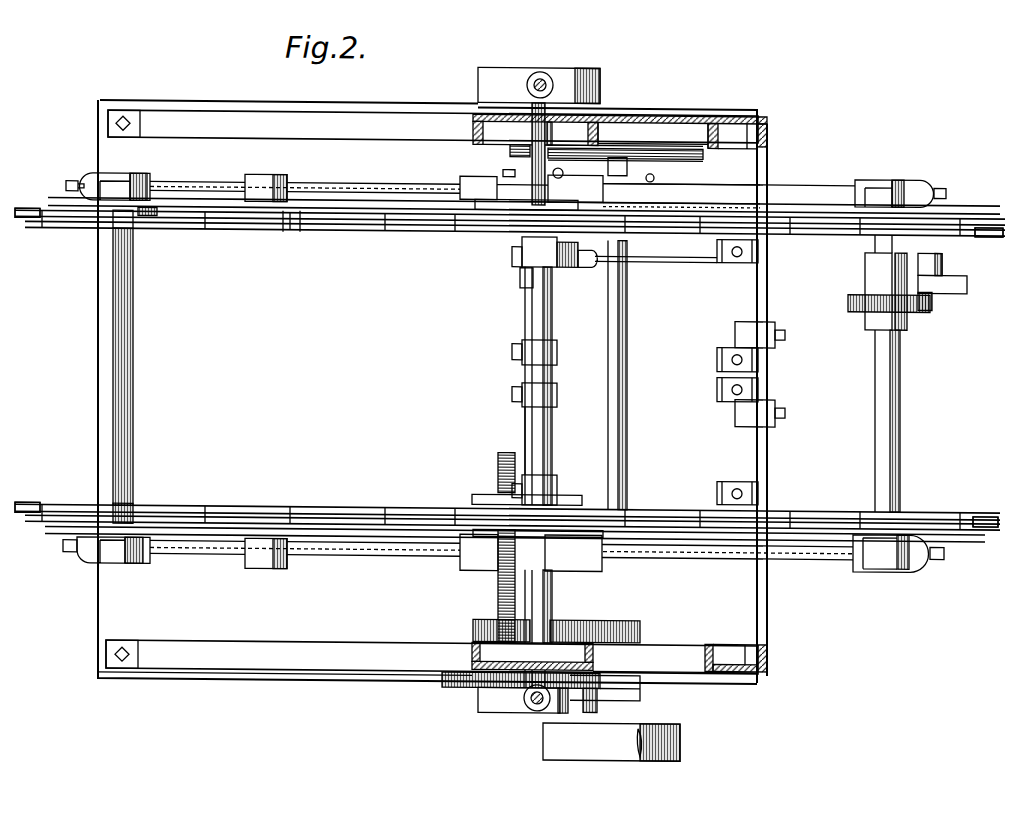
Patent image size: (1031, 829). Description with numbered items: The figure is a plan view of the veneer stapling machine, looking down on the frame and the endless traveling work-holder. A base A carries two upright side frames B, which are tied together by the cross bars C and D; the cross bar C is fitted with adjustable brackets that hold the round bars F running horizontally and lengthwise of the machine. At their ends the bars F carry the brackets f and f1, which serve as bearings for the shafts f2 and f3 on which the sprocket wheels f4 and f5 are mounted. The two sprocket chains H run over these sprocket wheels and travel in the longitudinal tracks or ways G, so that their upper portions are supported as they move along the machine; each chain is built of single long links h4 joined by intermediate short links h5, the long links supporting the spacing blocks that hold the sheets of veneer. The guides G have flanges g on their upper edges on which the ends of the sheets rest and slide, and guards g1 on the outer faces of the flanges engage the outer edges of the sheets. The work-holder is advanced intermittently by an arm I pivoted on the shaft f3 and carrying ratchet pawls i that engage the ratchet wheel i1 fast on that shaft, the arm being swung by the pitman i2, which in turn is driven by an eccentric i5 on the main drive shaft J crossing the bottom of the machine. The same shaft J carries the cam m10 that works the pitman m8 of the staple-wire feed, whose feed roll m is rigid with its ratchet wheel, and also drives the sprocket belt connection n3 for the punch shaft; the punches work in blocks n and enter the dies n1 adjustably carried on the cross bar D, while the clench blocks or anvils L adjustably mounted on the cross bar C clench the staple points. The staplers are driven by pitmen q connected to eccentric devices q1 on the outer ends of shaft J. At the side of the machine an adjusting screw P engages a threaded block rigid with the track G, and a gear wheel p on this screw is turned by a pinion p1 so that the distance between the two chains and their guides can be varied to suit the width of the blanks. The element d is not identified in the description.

The base A is at (98, 446).
The side frames B is at (275, 117).
The cross bar D is at (768, 293).
The tracks or ways G is at (432, 233).
The bracket f is at (146, 180).
The bracket f1 is at (905, 176).
The shaft f2 is at (128, 406).
The shaft f3 is at (893, 424).
The sprocket wheel f4 is at (60, 504).
The sprocket wheel f5 is at (985, 231).
The round bars F is at (352, 190).
The sprocket chains H is at (255, 232).
The long links h4 is at (290, 229).
The short links h5 is at (136, 224).
The pitman q is at (541, 79).
The eccentric devices q1 is at (480, 70).
The cross bar C is at (490, 240).
The main drive shaft J is at (524, 415).
The clench blocks or anvils L is at (530, 262).
The adjusting screw P is at (497, 586).
The flanges g is at (352, 230).
The guards g1 is at (382, 204).
The gear wheel p is at (455, 686).
The pinion p1 is at (641, 684).
The sprocket belt connection n3 is at (648, 140).
The cam m10 is at (506, 168).
The feed roll m is at (552, 176).
The pitman m8 is at (655, 175).
The eccentric i5 is at (612, 432).
The pitman i2 is at (665, 262).
The blocks n is at (733, 259).
The block or die n1 is at (716, 488).
The block d is at (736, 322).
The ratchet wheel i1 is at (866, 300).
The ratchet pawls i is at (925, 305).
The arm I is at (968, 277).